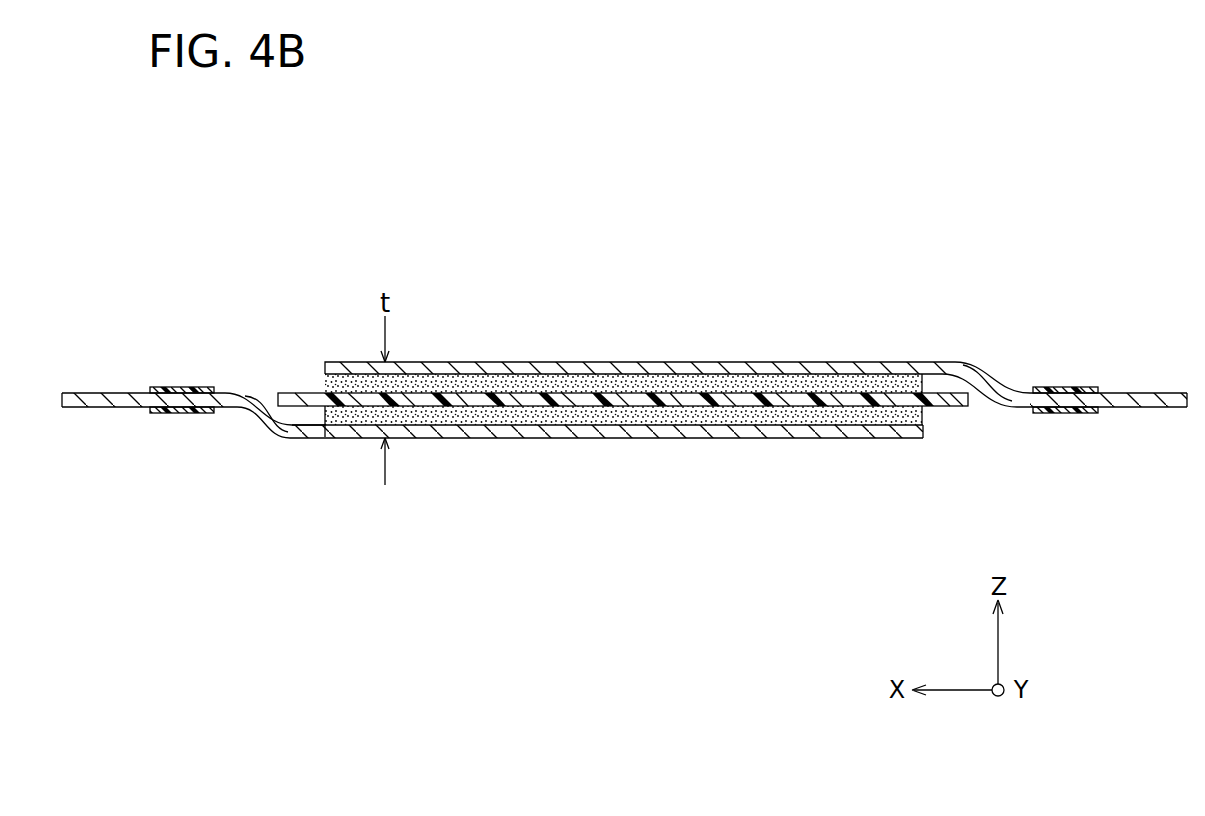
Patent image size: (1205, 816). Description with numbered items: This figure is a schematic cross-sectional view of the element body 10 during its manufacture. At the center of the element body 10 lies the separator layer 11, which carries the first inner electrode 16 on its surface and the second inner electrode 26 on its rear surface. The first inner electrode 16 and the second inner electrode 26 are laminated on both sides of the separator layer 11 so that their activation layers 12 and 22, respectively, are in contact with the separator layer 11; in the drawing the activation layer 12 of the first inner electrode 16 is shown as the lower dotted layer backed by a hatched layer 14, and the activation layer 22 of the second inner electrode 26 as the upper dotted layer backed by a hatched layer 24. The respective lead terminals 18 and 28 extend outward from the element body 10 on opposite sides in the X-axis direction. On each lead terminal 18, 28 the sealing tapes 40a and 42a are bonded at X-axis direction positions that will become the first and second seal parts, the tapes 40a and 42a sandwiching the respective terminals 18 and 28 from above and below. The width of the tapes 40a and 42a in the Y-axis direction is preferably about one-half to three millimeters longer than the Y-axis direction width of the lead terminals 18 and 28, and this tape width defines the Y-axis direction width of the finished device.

The element body 10 is at (654, 402).
The separator layer 11 is at (943, 400).
The activation layer 12 is at (697, 421).
The negative electrode current collector 14 is at (727, 518).
The first inner electrode 16 is at (607, 488).
The lead terminal 18 is at (101, 408).
The activation layer 22 is at (757, 277).
The positive electrode current collector 24 is at (736, 363).
The second inner electrode 26 is at (677, 320).
The lead terminal 28 is at (1148, 396).
The sealing tape 40a is at (176, 388).
The sealing tape 42a is at (1060, 388).